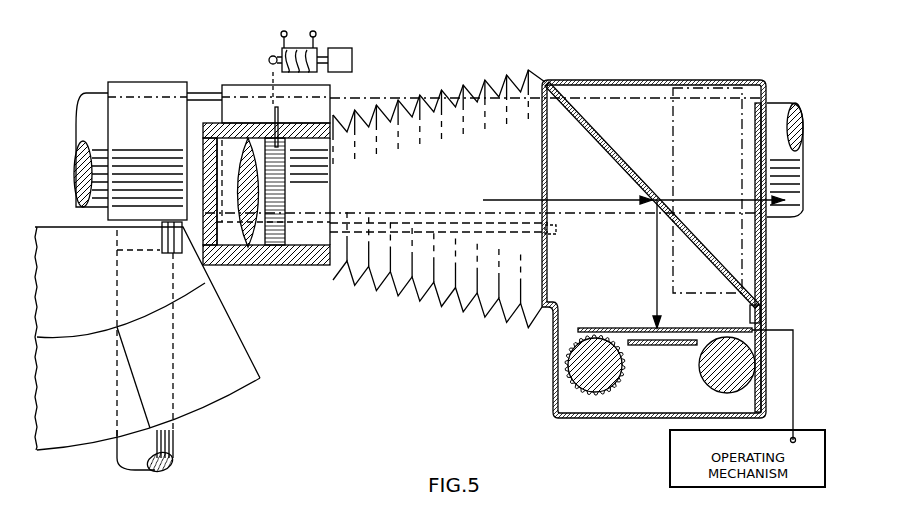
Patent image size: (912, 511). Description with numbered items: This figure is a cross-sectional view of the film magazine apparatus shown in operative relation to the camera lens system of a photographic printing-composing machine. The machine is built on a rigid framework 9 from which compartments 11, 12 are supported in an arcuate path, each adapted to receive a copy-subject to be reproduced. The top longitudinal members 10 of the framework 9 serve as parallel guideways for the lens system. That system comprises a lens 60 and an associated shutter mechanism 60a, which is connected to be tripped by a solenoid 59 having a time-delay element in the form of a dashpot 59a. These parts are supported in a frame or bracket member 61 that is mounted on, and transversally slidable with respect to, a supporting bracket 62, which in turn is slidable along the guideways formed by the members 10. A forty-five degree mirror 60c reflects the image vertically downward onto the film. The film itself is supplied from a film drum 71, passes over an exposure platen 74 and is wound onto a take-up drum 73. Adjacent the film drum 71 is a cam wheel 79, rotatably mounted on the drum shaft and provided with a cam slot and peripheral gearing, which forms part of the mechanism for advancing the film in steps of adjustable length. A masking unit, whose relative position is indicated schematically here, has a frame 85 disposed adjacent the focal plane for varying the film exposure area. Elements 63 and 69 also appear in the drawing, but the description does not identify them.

The framework 9 is at (175, 437).
The top longitudinal members 10 is at (200, 97).
The compartment 11 is at (194, 378).
The compartment 12 is at (88, 398).
The solenoid 59 is at (285, 46).
The dashpot 59a is at (352, 70).
The lens 60 is at (252, 178).
The shutter mechanism 60a is at (272, 194).
The 45° mirror 60c is at (602, 150).
The frame or bracket member 61 is at (212, 116).
The supporting bracket 62 is at (312, 88).
The camera housing 63 is at (650, 412).
The bellows 69 is at (490, 235).
The film drum 71 is at (620, 365).
The take-up drum 73 is at (703, 372).
The exposure platen 74 is at (650, 345).
The cam wheel 79 is at (607, 397).
The frame 85 is at (625, 328).